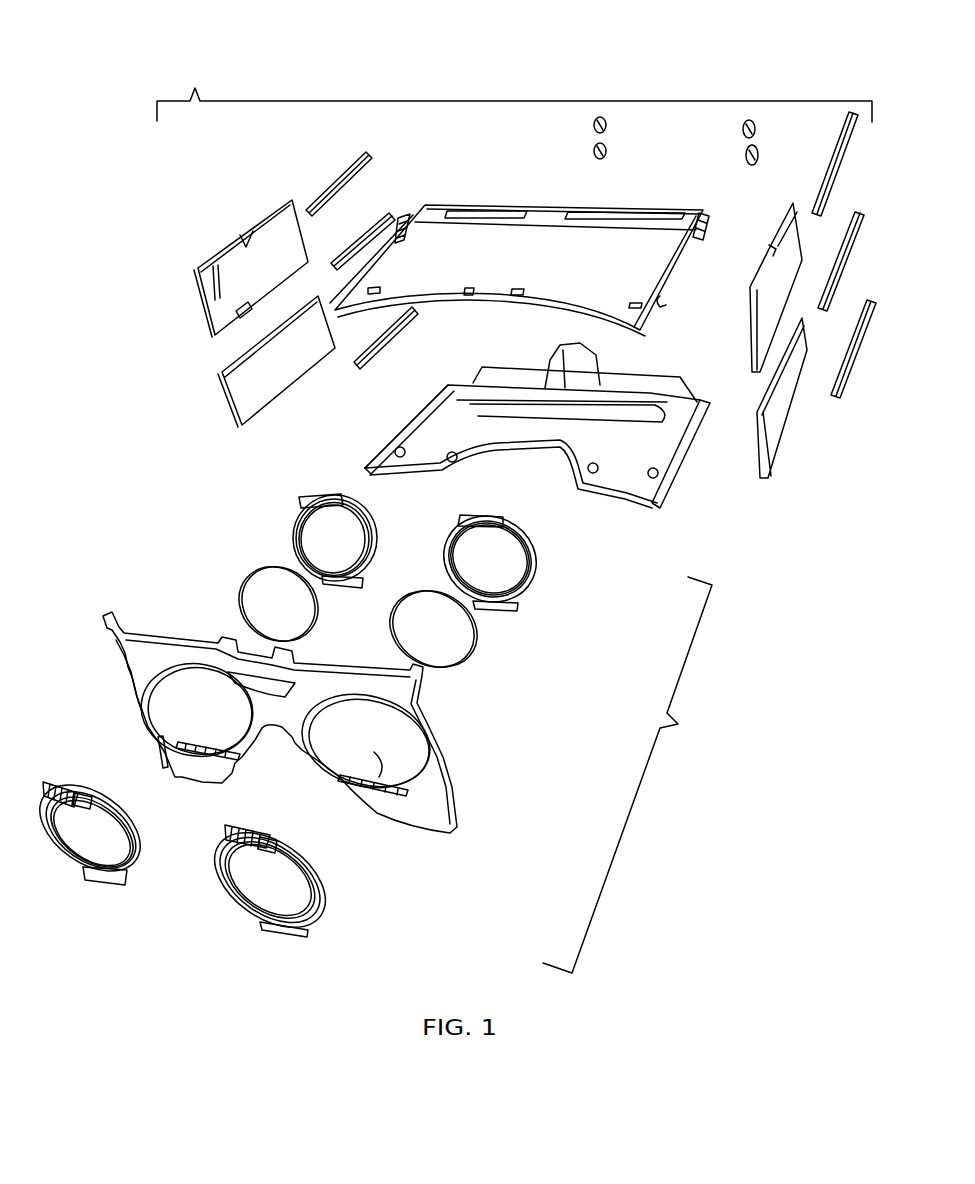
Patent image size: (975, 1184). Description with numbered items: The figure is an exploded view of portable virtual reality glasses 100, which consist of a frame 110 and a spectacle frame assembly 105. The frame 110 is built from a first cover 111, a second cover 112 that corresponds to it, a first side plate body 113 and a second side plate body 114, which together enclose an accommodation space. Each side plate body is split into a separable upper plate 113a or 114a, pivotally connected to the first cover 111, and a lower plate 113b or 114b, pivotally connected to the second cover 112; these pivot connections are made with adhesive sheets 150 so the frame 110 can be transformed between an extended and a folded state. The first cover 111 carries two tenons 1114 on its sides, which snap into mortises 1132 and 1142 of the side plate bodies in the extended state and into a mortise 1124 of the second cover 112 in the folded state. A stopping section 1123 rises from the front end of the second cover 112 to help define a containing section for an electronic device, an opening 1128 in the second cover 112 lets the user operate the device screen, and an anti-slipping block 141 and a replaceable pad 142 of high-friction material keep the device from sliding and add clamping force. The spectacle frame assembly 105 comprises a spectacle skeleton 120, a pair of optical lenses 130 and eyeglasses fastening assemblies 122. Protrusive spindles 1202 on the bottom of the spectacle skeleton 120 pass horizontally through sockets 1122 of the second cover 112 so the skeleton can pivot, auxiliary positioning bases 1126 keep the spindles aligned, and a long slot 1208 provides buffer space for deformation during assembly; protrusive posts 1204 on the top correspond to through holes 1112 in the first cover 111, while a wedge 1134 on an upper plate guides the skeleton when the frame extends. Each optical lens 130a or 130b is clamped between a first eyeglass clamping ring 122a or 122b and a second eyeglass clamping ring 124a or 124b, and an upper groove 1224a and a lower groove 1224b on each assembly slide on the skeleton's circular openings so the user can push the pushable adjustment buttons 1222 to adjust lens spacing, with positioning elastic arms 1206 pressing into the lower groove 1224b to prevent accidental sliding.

The portable virtual reality glasses 100 is at (135, 42).
The spectacle frame assembly 105 is at (636, 775).
The frame 110 is at (514, 90).
The first cover 111 is at (520, 263).
The through holes 1112 is at (377, 288).
The tenons 1114 is at (665, 295).
The second cover 112 is at (537, 426).
The sockets 1122 is at (400, 459).
The stopping section 1123 is at (482, 380).
The mortise 1124 is at (402, 428).
The auxiliary positioning base 1126 is at (460, 459).
The opening 1128 is at (645, 412).
The first side plate body 113 is at (240, 311).
The upper plate 113a is at (213, 307).
The lower plate 113b is at (317, 347).
The mortise 1132 is at (243, 235).
The wedge 1134 is at (242, 308).
The second side plate body 114 is at (784, 348).
The upper plate 114a is at (751, 275).
The lower plate 114b is at (780, 450).
The mortise 1142 is at (770, 245).
The spectacle skeleton 120 is at (299, 728).
The protrusive spindles 1202 is at (158, 763).
The protrusive posts 1204 is at (110, 616).
The positioning elastic arms 1206 is at (377, 756).
The long slot 1208 is at (171, 772).
The eyeglasses fastening assembly 122 is at (346, 717).
The first eyeglass clamping ring 122a is at (407, 574).
The first eyeglass clamping ring 122b is at (293, 528).
The pushable adjustment buttons 1222 is at (240, 826).
The upper groove 1224a is at (502, 527).
The lower groove 1224b is at (518, 607).
The second eyeglass clamping ring 124a is at (288, 869).
The second eyeglass clamping ring 124b is at (138, 866).
The optical lens 130 is at (363, 635).
The optical lens 130a is at (463, 667).
The optical lens 130b is at (242, 586).
The anti-slipping block 141 is at (580, 133).
The replaceable pad 142 is at (577, 372).
The adhesive sheets 150 is at (872, 383).